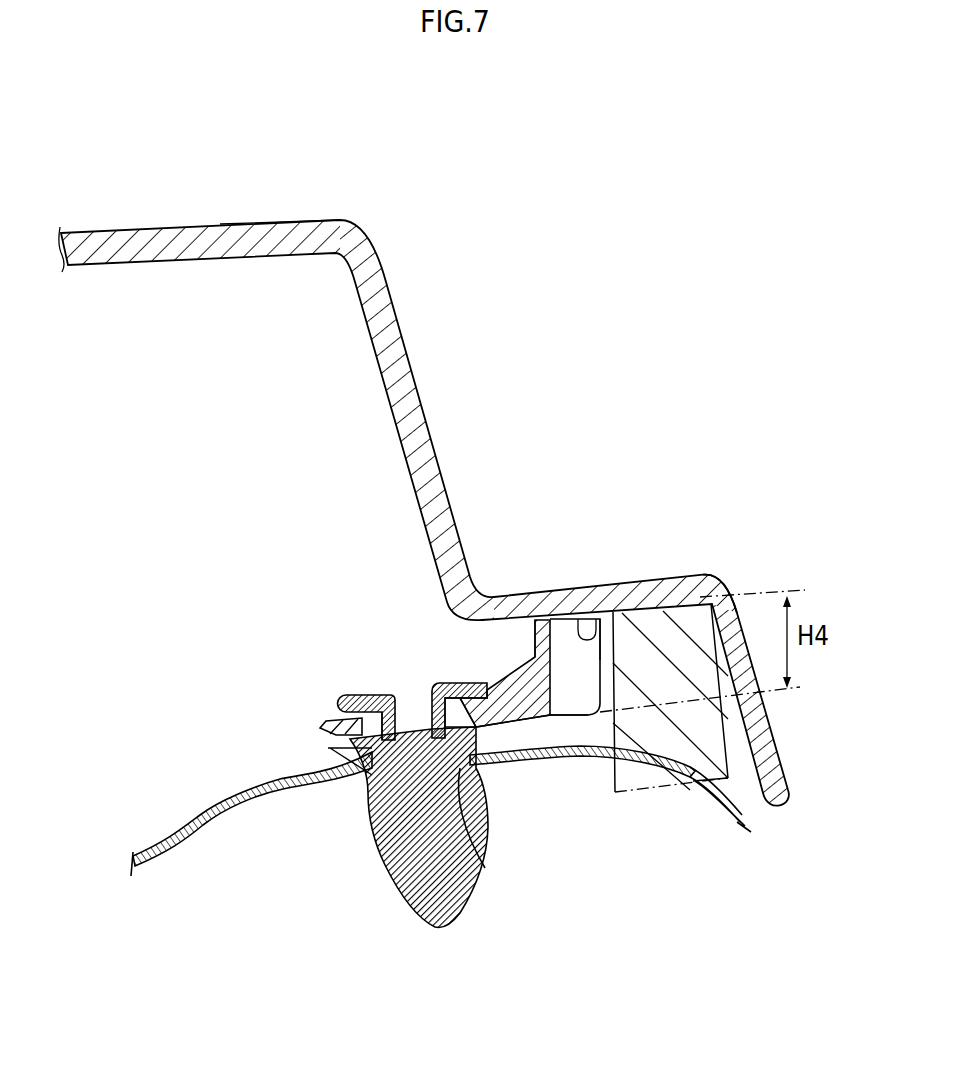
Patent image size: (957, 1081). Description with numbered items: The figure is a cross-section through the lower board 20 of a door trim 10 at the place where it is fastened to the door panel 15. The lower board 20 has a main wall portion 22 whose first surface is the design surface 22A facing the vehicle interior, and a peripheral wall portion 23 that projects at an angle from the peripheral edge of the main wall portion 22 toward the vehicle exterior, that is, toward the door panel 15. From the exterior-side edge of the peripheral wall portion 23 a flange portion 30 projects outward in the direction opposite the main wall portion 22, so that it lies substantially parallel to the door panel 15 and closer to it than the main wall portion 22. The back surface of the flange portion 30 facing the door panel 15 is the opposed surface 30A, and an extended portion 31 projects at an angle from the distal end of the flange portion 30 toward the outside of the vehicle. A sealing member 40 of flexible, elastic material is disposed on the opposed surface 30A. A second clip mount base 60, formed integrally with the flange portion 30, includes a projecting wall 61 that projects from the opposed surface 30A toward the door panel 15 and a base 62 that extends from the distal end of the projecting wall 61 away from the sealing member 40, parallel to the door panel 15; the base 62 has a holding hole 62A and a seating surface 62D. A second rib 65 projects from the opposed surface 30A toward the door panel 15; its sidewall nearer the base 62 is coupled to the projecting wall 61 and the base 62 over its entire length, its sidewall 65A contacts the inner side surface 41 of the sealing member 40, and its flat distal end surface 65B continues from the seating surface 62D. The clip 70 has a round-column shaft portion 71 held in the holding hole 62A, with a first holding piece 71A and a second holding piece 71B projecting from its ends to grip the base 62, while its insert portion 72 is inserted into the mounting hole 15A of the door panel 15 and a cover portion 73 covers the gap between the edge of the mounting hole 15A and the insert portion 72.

The door trim 10 is at (420, 476).
The lower board 20 is at (84, 226).
The main wall portion 22 is at (197, 232).
The design surface 22A is at (265, 222).
The peripheral wall portion 23 is at (386, 294).
The flange portion 30 is at (662, 637).
The opposed surface 30A is at (714, 600).
The extended portion 31 is at (755, 730).
The sealing member 40 is at (687, 750).
The second clip mount base 60 is at (524, 665).
The projecting wall 61 is at (532, 642).
The base 62 is at (515, 708).
The holding hole 62A is at (440, 682).
The seating surface 62D is at (530, 725).
The second rib 65 is at (563, 640).
The sidewall 65A is at (607, 607).
The distal end surface 65B is at (573, 717).
The inner side surface 41 is at (570, 607).
The door panel 15 is at (152, 868).
The mounting hole 15A is at (480, 868).
The clip 70 is at (384, 771).
The shaft portion 71 is at (390, 697).
The first holding piece 71A is at (322, 745).
The second holding piece 71B is at (347, 693).
The insert portion 72 is at (418, 928).
The cover portion 73 is at (333, 785).